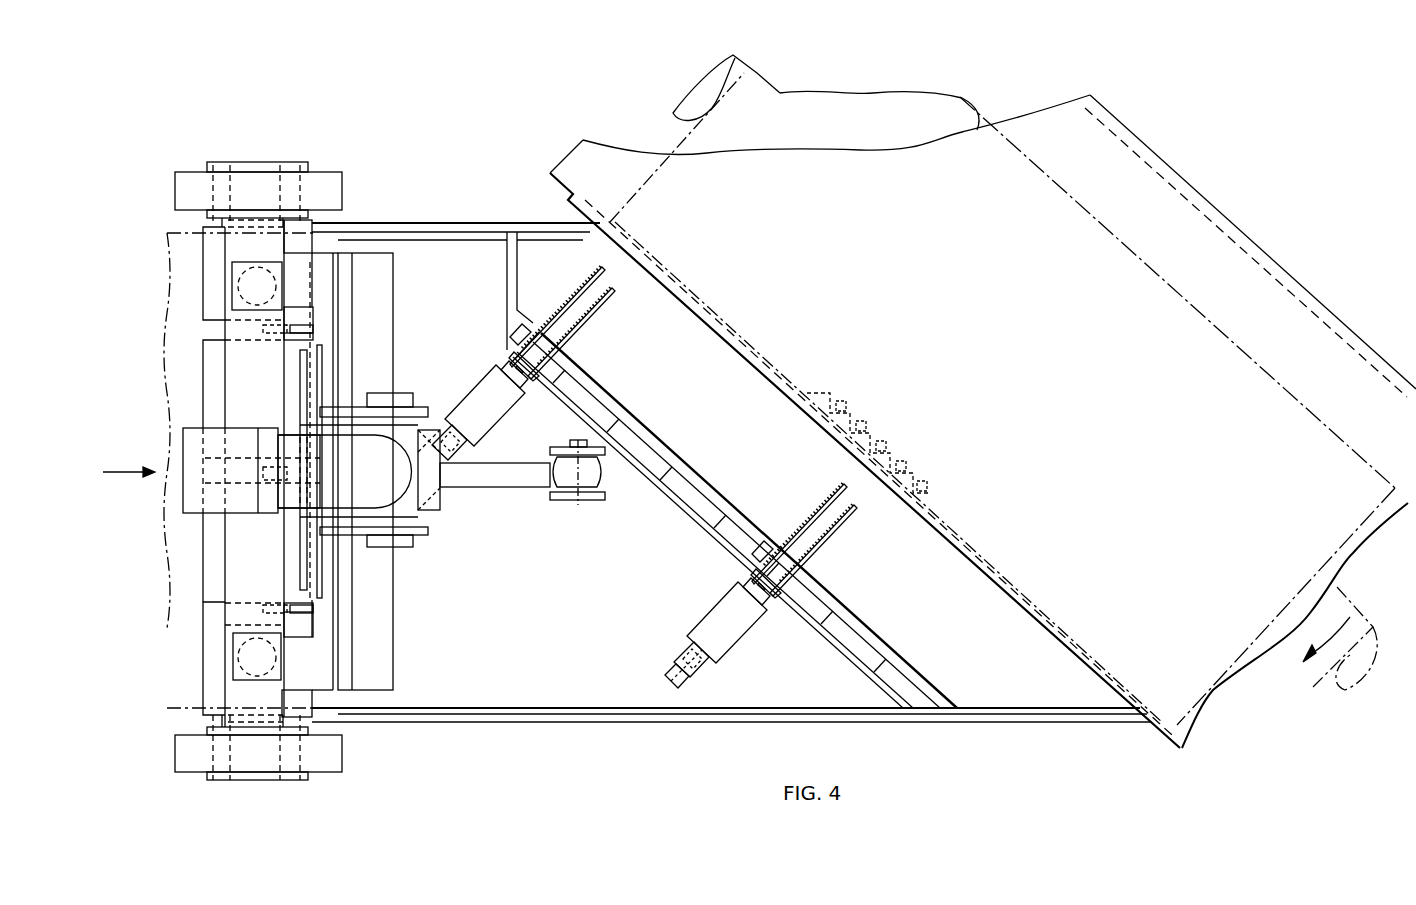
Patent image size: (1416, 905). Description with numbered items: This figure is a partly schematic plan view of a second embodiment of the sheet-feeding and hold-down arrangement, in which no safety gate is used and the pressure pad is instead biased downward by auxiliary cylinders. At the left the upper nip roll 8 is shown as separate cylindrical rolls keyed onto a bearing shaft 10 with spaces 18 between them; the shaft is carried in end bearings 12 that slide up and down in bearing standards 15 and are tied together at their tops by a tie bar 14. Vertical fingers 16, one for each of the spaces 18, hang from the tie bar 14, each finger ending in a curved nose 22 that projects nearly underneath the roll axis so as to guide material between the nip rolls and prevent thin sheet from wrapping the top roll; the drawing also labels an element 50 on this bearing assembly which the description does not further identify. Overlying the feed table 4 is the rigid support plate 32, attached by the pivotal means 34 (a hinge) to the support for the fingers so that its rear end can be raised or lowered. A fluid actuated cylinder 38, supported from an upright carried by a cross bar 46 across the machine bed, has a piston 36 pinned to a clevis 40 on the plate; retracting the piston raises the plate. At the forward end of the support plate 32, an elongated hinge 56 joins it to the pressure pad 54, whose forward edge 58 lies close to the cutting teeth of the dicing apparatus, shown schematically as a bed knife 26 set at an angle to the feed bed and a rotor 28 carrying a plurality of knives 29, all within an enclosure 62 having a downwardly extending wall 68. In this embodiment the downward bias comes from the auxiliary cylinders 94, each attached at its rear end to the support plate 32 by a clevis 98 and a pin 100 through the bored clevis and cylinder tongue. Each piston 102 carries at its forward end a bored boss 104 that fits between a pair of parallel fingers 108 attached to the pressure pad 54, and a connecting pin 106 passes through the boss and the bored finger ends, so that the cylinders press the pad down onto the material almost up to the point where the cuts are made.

The feed table 4 is at (443, 223).
The nip roll 8 is at (203, 393).
The bearing shaft 10 is at (228, 185).
The end bearings 12 is at (216, 162).
The tie bar 14 is at (225, 268).
The bearing standards 15 is at (175, 196).
The vertical fingers 16 is at (313, 613).
The spaces 18 is at (215, 612).
The nose 22 is at (267, 612).
The bed knife 26 is at (935, 497).
The rotor 28 is at (1345, 570).
The knives 29 is at (832, 400).
The support plate 32 is at (590, 601).
The pivotal means 34 is at (345, 644).
The piston 36 is at (492, 487).
The fluid actuated cylinder 38 is at (412, 492).
The clevis 40 is at (603, 496).
The cross bar 46 is at (300, 373).
The shaft block 50 is at (232, 302).
The pressure pad 54 is at (938, 597).
The elongated hinge 56 is at (848, 630).
The forward edge 58 is at (1003, 573).
The enclosure 62 is at (1252, 237).
The wall 68 is at (1043, 627).
The auxiliary cylinders 94 is at (477, 402).
The clevis 98 is at (470, 452).
The pin 100 is at (667, 644).
The pistons 102 is at (517, 358).
The boss 104 is at (552, 365).
The connecting pin 106 is at (510, 334).
The parallel fingers 108 is at (563, 327).